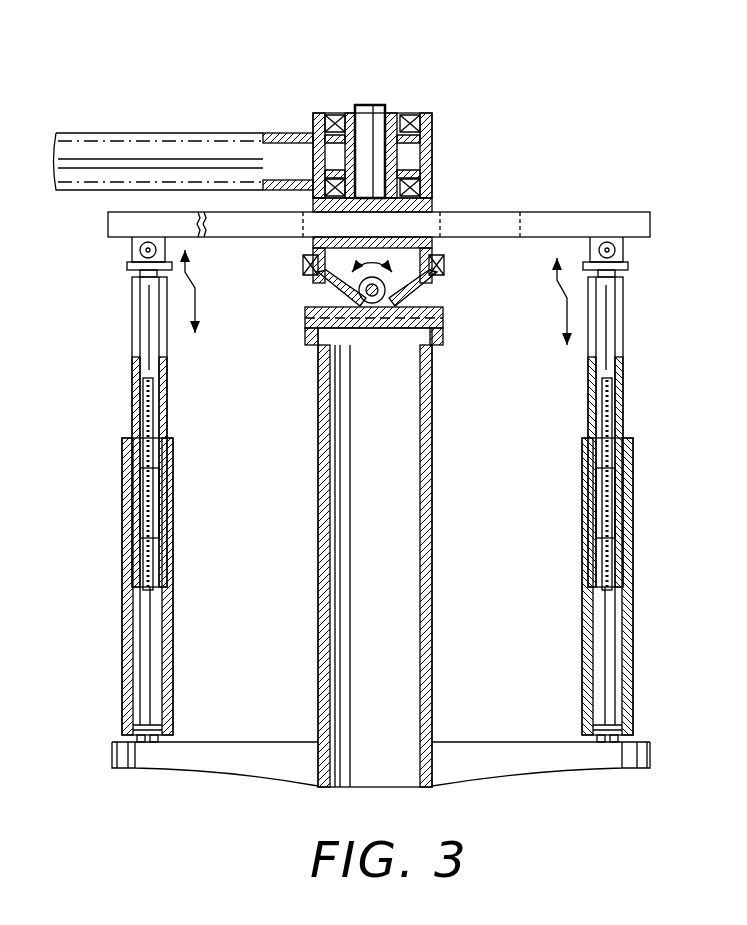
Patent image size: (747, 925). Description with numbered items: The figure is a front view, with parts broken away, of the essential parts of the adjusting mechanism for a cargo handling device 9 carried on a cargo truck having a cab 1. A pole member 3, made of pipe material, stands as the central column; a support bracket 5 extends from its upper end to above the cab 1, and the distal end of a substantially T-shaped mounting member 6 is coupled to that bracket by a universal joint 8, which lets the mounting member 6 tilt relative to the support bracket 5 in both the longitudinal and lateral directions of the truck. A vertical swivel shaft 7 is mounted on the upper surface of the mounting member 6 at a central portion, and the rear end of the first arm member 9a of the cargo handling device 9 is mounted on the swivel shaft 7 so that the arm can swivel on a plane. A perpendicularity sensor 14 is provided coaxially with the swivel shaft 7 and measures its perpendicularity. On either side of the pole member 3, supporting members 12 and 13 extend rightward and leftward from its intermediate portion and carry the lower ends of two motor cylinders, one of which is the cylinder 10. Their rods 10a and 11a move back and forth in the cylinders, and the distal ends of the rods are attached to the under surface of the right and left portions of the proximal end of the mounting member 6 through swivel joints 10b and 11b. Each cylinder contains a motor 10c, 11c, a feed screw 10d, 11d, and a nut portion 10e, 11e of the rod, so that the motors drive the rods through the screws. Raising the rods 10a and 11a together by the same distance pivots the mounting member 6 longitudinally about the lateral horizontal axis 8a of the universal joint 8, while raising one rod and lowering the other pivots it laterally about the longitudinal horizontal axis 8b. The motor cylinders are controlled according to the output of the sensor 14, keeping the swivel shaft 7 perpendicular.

The cab 1 is at (649, 489).
The pole member 3 is at (432, 570).
The support bracket 5 is at (423, 301).
The mounting member 6 is at (548, 212).
The swivel shaft 7 is at (345, 160).
The universal joint 8 is at (373, 325).
The horizontal axis 8a is at (440, 262).
The horizontal axis 8b is at (363, 305).
The cargo handling device 9 is at (159, 108).
The first arm member 9a is at (186, 132).
The cylinder 10 is at (147, 489).
The rod 10a is at (138, 320).
The swivel joint 10b is at (135, 257).
The motor 10c is at (145, 684).
The feed screw 10d is at (150, 553).
The nut portion 10e is at (168, 483).
The rod 11a is at (612, 320).
The swivel joint 11b is at (622, 257).
The motor 11c is at (615, 683).
The feed screw 11d is at (612, 548).
The nut portion 11e is at (615, 483).
The supporting member 12 is at (248, 752).
The supporting member 13 is at (520, 752).
The perpendicularity sensor 14 is at (371, 125).